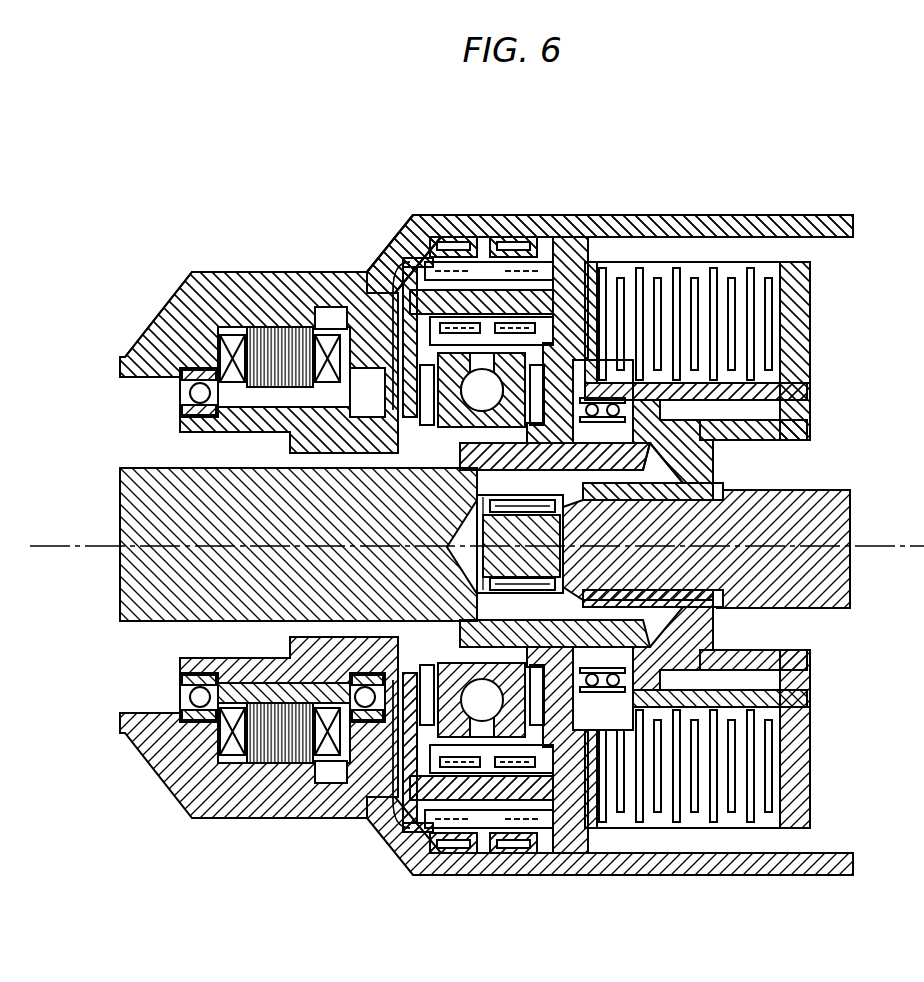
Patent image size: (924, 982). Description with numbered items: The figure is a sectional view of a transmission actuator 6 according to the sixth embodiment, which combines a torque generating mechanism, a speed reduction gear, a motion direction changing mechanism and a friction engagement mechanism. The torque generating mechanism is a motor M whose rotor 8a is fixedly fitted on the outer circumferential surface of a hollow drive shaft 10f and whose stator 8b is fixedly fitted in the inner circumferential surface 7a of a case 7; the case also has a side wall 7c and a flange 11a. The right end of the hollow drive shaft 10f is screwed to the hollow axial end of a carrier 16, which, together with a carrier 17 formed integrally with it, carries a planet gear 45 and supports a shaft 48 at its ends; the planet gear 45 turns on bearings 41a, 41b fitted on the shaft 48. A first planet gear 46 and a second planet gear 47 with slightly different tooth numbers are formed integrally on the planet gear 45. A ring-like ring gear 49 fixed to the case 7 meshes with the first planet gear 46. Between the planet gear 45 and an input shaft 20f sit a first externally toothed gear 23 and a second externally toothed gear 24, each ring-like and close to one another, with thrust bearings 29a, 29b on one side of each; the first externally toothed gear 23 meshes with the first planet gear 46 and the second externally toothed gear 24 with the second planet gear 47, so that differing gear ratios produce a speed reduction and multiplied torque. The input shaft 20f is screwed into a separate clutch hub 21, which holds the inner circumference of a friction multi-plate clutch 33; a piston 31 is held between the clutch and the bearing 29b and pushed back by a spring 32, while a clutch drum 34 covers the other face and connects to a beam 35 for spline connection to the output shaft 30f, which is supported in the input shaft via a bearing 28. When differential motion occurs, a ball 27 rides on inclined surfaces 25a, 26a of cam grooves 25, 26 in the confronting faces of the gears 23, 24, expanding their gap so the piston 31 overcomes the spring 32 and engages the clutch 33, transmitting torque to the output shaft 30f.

The transmission actuator 6 is at (200, 243).
The motor M is at (263, 196).
The case 7 is at (290, 270).
The inner circumferential surface 7a is at (307, 297).
The housing side wall 7c is at (373, 300).
The rotor 8a is at (262, 322).
The stator 8b is at (238, 313).
The housing flange 11a is at (178, 303).
The hollow drive shaft 10f is at (182, 418).
The input shaft 20f is at (168, 470).
The carrier 16 is at (413, 262).
The thrust bearing 29a is at (407, 312).
The planet gear 45 is at (488, 138).
The first planet gear 46 is at (470, 245).
The second planet gear 47 is at (518, 247).
The shaft 48 is at (510, 320).
The ring gear 49 is at (462, 270).
The bearing 41a is at (478, 300).
The bearing 41b is at (545, 300).
The carrier 17 is at (575, 340).
The thrust bearing 29b is at (598, 288).
The piston 31 is at (622, 350).
The spring 32 is at (652, 330).
The friction multi-plate clutch 33 is at (705, 288).
The clutch drum 34 is at (830, 240).
The clutch hub 21 is at (795, 392).
The beam 35 is at (793, 424).
The output shaft 30f is at (810, 490).
The bearing 28 is at (600, 540).
The ball 27 is at (367, 830).
The first externally toothed gear 23 is at (383, 838).
The cam groove 25 is at (400, 823).
The inclined surface 25a is at (432, 820).
The inclined surface 26a is at (527, 807).
The cam groove 26 is at (523, 755).
The second externally toothed gear 24 is at (547, 780).